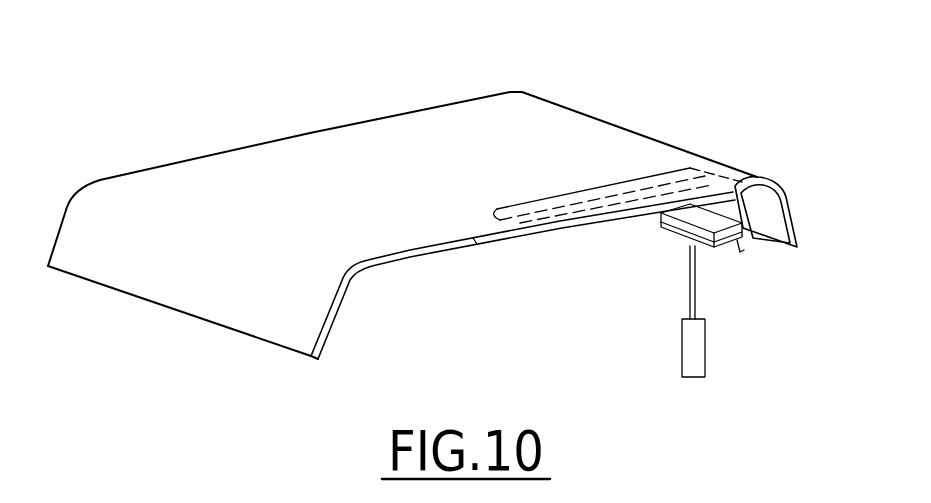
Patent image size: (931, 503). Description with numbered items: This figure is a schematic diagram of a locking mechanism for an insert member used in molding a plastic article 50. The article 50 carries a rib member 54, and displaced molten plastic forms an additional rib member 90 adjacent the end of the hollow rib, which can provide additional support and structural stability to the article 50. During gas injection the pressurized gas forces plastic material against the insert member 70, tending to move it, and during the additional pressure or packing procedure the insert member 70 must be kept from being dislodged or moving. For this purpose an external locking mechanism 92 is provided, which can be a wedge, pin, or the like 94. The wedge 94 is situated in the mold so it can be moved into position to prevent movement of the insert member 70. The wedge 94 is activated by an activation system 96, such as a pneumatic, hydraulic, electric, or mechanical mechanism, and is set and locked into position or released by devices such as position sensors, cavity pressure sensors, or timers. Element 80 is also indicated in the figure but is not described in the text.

The article 50 is at (535, 108).
The rib member 54 is at (737, 203).
The insert member 70 is at (760, 225).
The clip tab 80 is at (740, 250).
The additional rib member 90 is at (662, 218).
The external locking mechanism 92 is at (618, 320).
The wedge 94 is at (687, 242).
The activation system 96 is at (685, 365).